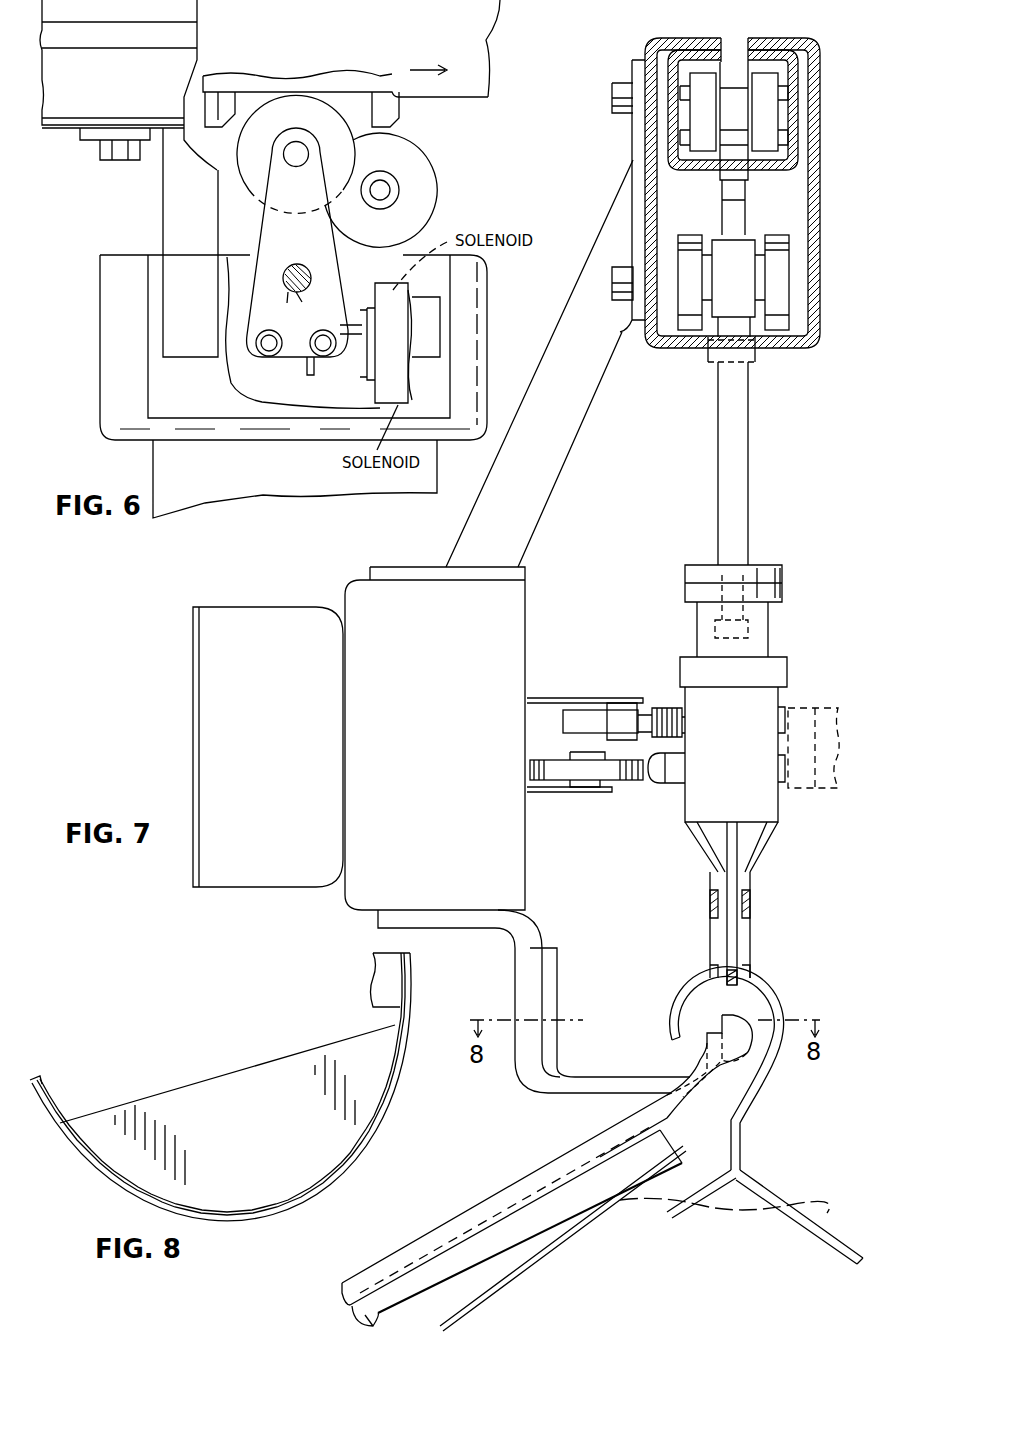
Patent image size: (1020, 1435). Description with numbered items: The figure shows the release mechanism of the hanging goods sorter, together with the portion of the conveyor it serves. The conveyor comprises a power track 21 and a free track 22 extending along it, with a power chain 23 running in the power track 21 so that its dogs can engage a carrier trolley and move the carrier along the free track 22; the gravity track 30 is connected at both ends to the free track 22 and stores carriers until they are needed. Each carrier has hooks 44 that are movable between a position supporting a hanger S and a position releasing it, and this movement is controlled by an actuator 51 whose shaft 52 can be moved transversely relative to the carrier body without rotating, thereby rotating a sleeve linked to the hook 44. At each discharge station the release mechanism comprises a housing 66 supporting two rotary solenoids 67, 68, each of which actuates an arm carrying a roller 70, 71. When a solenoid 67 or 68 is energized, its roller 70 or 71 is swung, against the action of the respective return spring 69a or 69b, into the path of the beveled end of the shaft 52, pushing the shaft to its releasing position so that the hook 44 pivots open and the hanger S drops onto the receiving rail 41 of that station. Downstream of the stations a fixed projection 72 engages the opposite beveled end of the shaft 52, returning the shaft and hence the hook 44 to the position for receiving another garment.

In FIG. 6, the power track 21 is at (498, 22).
In FIG. 7, the power track 21 is at (766, 48).
In FIG. 6, the free track 22 is at (185, 67).
In FIG. 7, the free track 22 is at (782, 348).
In FIG. 7, the power chain 23 is at (767, 108).
In FIG. 7, the gravity track 30 is at (764, 497).
In FIG. 7, the receiving rail 41 is at (745, 1050).
In FIG. 8, the receiving rail 41 is at (50, 1100).
In FIG. 7, the hook 44 is at (732, 937).
In FIG. 7, the actuator 51 is at (782, 702).
In FIG. 6, the shaft 52 is at (220, 113).
In FIG. 7, the shaft 52 is at (672, 707).
In FIG. 6, the housing 66 is at (100, 365).
In FIG. 7, the housing 66 is at (353, 892).
In FIG. 6, the solenoid 67 is at (397, 385).
In FIG. 6, the solenoid 68 is at (430, 268).
In FIG. 6, the return spring 69a is at (317, 293).
In FIG. 6, the return spring 69b is at (277, 288).
In FIG. 6, the roller 70 is at (252, 192).
In FIG. 7, the roller 70 is at (589, 718).
In FIG. 6, the roller 71 is at (438, 185).
In FIG. 7, the roller 71 is at (607, 783).
In FIG. 7, the fixed projection 72 is at (808, 742).
In FIG. 7, the hanger S is at (611, 1254).